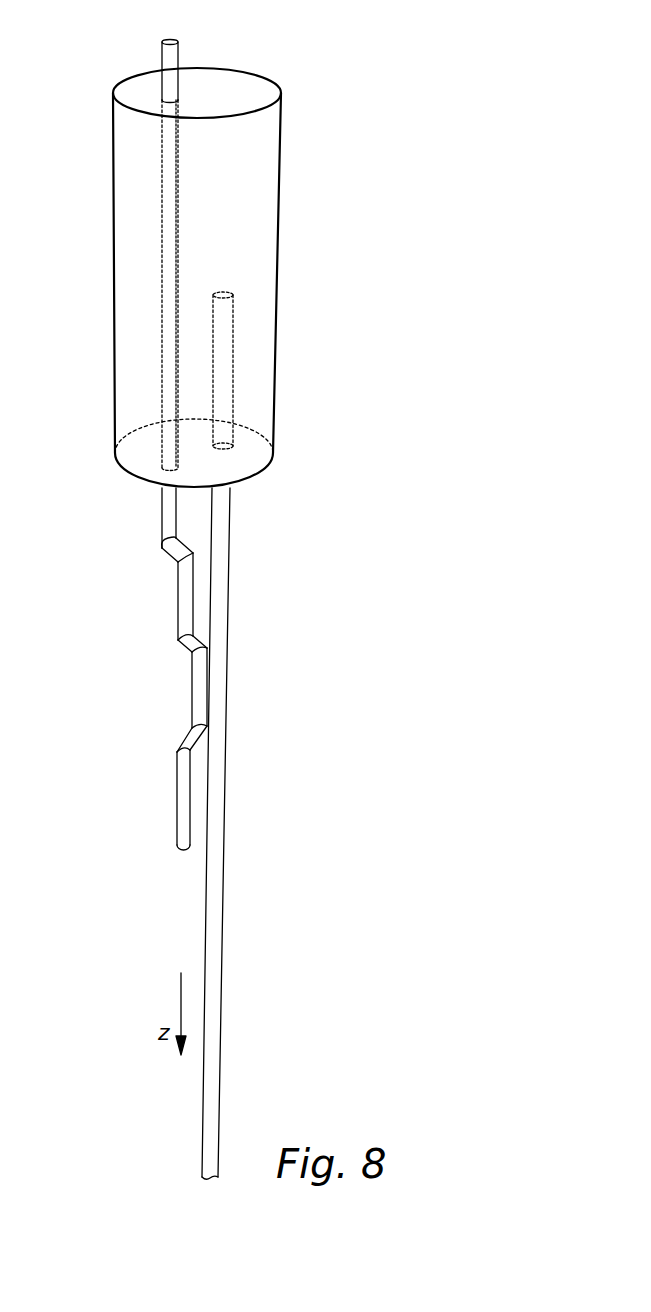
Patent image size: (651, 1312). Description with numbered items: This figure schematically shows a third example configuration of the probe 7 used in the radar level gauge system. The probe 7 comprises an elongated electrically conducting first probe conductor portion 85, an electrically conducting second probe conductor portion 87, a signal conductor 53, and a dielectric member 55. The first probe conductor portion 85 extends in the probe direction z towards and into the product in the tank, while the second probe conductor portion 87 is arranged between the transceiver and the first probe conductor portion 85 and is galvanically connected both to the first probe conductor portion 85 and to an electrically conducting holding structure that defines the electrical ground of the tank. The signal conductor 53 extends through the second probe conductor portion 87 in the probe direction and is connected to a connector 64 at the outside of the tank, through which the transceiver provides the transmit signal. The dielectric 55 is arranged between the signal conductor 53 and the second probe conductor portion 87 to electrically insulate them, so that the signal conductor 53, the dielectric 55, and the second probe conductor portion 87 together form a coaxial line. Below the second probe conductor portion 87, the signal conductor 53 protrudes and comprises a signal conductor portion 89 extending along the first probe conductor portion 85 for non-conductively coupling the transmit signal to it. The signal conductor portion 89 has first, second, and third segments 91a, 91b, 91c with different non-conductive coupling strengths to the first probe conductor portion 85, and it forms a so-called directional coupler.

The probe 7 is at (300, 165).
The connector 64 is at (172, 40).
The signal conductor 53 is at (165, 223).
The dielectric member 55 is at (160, 263).
The second probe conductor portion 87 is at (262, 305).
The first probe conductor portion 85 is at (218, 962).
The signal conductor portion 89 is at (116, 695).
The first segment 91a is at (163, 543).
The second segment 91b is at (163, 652).
The third segment 91c is at (163, 757).